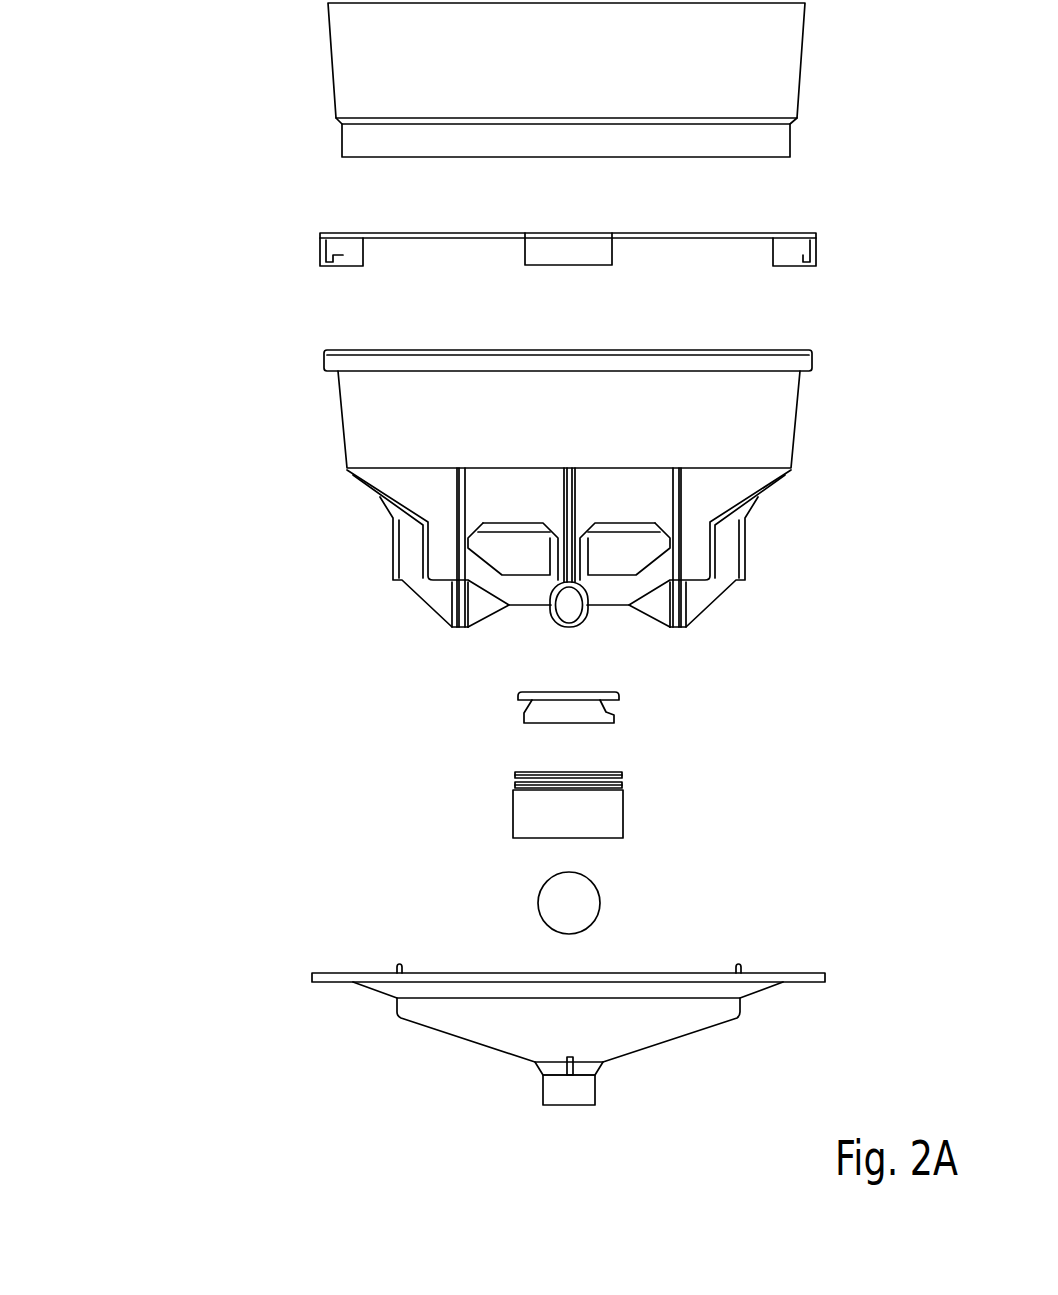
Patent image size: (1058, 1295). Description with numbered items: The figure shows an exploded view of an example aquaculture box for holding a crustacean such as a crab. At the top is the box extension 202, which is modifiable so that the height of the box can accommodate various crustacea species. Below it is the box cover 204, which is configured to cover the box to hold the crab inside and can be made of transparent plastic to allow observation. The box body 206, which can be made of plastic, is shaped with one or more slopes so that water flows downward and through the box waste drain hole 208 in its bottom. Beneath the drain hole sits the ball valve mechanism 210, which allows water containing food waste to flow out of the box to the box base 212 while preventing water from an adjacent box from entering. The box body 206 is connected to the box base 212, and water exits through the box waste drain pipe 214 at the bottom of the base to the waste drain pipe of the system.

The box extension 202 is at (393, 77).
The box cover 204 is at (343, 253).
The box body 206 is at (418, 430).
The box waste drain hole 208 is at (570, 612).
The ball valve mechanism 210 is at (427, 927).
The box base 212 is at (440, 1013).
The box waste drain pipe 214 is at (580, 1087).